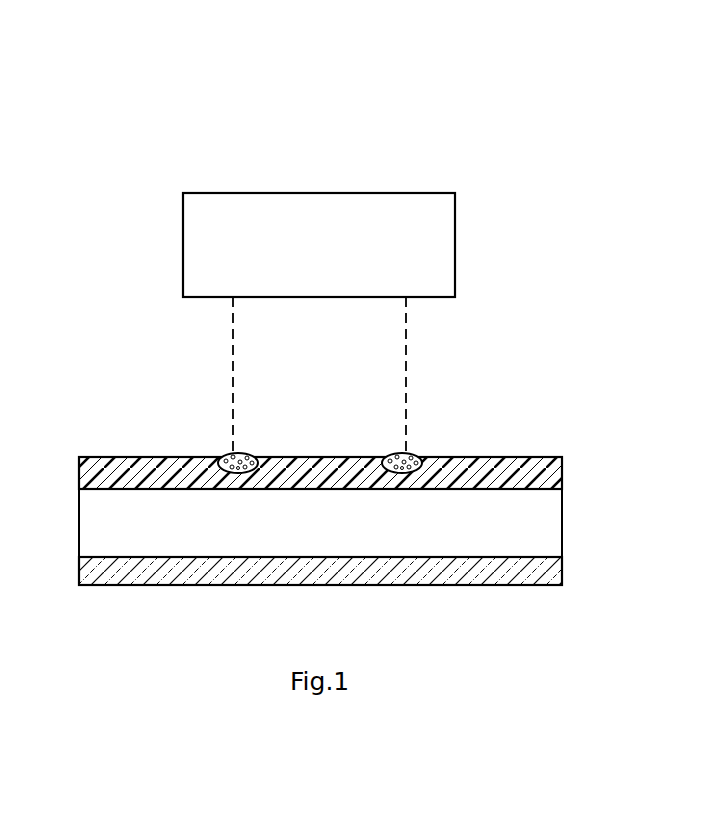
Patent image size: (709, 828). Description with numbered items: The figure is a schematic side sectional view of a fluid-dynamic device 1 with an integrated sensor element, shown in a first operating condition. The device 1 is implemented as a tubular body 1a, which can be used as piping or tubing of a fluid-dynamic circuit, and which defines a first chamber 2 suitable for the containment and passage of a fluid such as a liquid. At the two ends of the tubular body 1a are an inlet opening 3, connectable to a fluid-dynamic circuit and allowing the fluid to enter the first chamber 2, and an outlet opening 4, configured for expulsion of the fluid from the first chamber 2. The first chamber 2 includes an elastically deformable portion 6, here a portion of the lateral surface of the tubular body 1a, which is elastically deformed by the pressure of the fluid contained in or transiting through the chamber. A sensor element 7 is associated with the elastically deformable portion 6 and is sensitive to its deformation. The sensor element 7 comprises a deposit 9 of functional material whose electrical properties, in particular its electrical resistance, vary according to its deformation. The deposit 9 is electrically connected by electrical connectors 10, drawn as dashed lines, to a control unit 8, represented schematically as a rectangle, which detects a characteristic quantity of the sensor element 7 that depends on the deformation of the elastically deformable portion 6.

The fluid-dynamic device 1 is at (565, 434).
The tubular body 1a is at (324, 583).
The first chamber 2 is at (150, 514).
The inlet opening 3 is at (563, 528).
The outlet opening 4 is at (84, 538).
The elastically deformable portion 6 is at (118, 474).
The sensor element 7 is at (219, 450).
The control unit 8 is at (315, 229).
The deposit of functional material 9 is at (234, 476).
The electrical connectors 10 is at (231, 345).